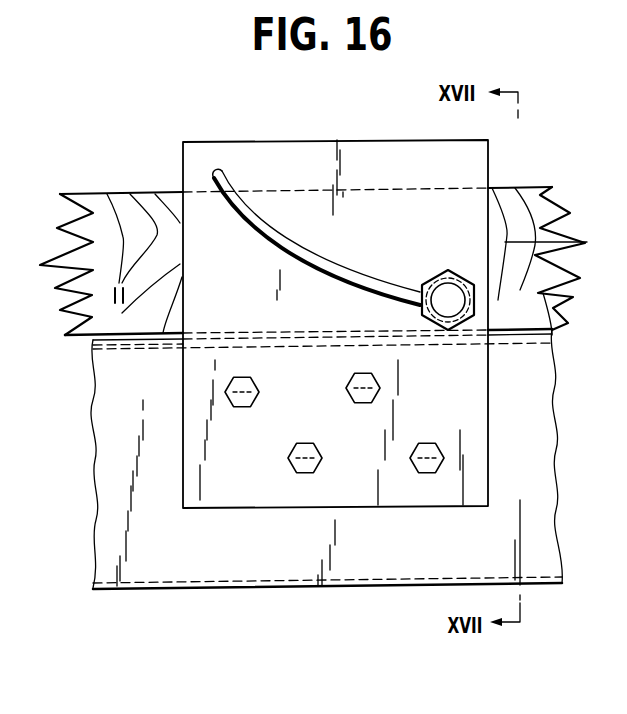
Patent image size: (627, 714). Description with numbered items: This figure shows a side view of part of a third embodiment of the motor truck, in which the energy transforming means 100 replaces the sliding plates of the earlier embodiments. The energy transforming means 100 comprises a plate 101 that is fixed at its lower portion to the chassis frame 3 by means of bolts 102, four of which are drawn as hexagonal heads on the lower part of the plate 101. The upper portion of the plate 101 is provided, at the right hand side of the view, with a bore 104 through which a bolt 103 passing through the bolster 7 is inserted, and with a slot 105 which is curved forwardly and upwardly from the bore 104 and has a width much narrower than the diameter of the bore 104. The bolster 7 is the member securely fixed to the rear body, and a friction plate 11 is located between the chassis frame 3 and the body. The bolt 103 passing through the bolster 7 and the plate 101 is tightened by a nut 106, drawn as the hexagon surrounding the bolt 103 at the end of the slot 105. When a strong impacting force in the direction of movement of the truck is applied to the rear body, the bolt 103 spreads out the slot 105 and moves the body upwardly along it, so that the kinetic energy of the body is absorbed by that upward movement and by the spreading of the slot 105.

The chassis frame 3 is at (112, 475).
The bolster 7 is at (140, 193).
The friction plate 11 is at (137, 335).
The energy transforming means 100 is at (363, 136).
The plate 101 is at (235, 490).
The bolts 102 is at (379, 392).
The bolt 103 is at (446, 297).
The bore 104 is at (489, 305).
The slot 105 is at (318, 265).
The nut 106 is at (462, 272).